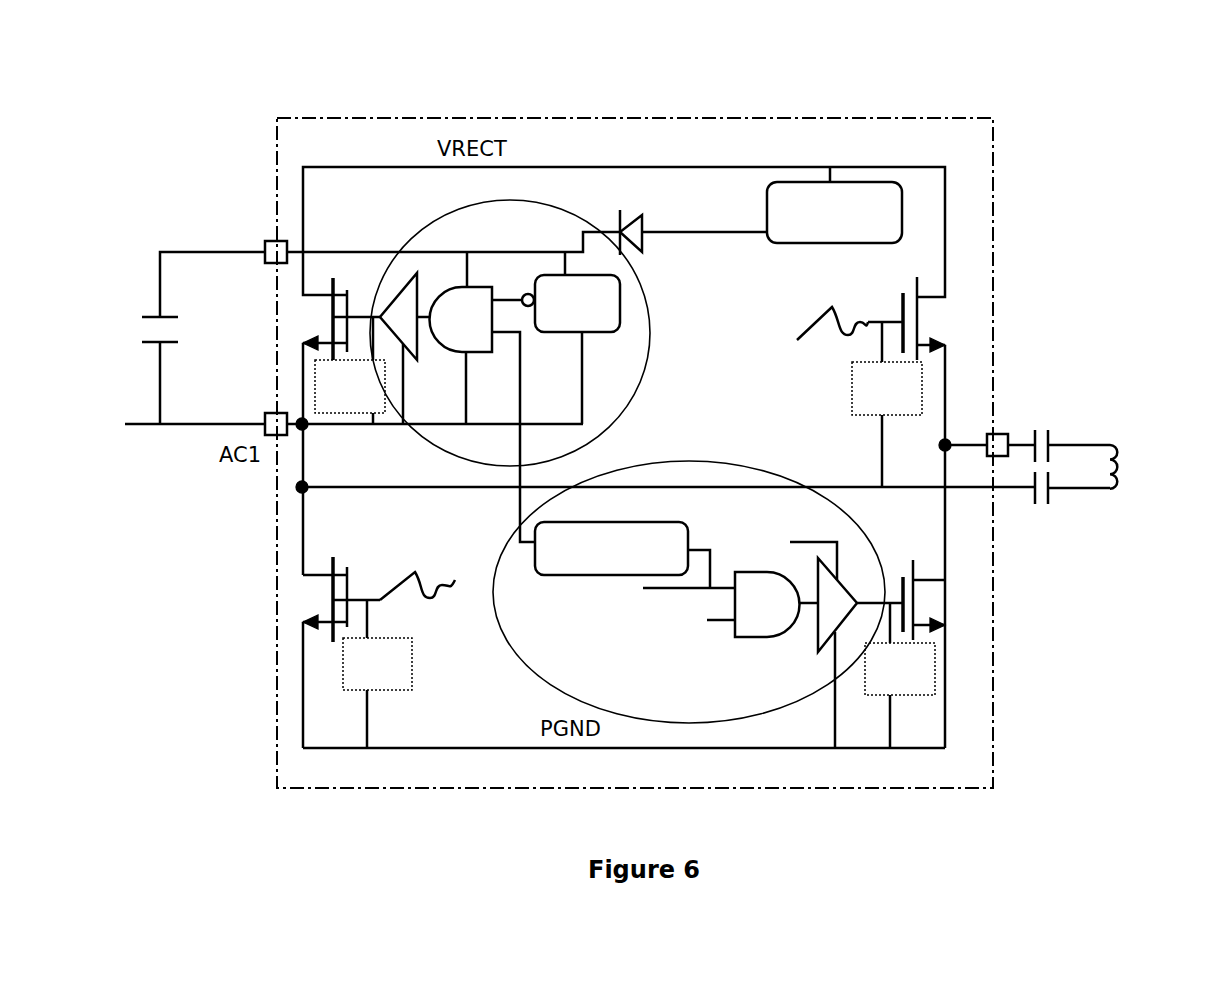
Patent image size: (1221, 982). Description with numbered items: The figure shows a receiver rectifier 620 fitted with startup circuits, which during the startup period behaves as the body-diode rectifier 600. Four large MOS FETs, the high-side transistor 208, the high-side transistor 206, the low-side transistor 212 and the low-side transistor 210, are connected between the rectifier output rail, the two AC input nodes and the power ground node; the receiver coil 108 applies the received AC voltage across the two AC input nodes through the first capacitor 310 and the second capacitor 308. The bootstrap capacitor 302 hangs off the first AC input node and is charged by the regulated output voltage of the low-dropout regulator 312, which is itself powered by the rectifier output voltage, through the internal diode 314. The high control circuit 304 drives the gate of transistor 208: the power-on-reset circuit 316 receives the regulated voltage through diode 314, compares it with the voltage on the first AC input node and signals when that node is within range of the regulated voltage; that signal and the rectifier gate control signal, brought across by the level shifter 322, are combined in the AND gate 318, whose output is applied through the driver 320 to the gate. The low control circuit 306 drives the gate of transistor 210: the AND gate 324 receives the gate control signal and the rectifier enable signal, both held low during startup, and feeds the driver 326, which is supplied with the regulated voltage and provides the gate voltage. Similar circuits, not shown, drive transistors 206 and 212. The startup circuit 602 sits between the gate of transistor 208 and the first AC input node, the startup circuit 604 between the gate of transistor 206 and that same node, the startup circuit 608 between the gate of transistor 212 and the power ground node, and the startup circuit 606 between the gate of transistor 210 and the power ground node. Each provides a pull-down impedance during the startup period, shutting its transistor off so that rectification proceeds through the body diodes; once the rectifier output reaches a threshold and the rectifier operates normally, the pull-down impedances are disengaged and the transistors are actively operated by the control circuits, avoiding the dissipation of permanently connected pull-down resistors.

The rectifier 600 is at (130, 124).
The receiver coil 108 is at (1127, 475).
The MH2 transistor 206 is at (897, 313).
The MH1 transistor 208 is at (322, 288).
The ML2 transistor 210 is at (902, 570).
The ML1 transistor 212 is at (350, 583).
The capacitor Cbst 302 is at (142, 339).
The high control circuit 304 is at (623, 320).
The low control circuit 306 is at (515, 598).
The capacitor C1 308 is at (1043, 492).
The capacitor C2 310 is at (1052, 440).
The LDO regulator 312 is at (787, 235).
The internal diode D1 314 is at (620, 225).
The power-on-reset circuit 316 is at (568, 312).
The AND gate 318 is at (468, 333).
The driver 320 is at (402, 320).
The level shifter 322 is at (608, 545).
The AND gate 324 is at (770, 610).
The driver 326 is at (830, 605).
The startup circuit 602 is at (365, 403).
The startup circuit 604 is at (852, 378).
The startup circuit 606 is at (925, 665).
The startup circuit 608 is at (392, 673).
The rectifier 620 is at (756, 351).